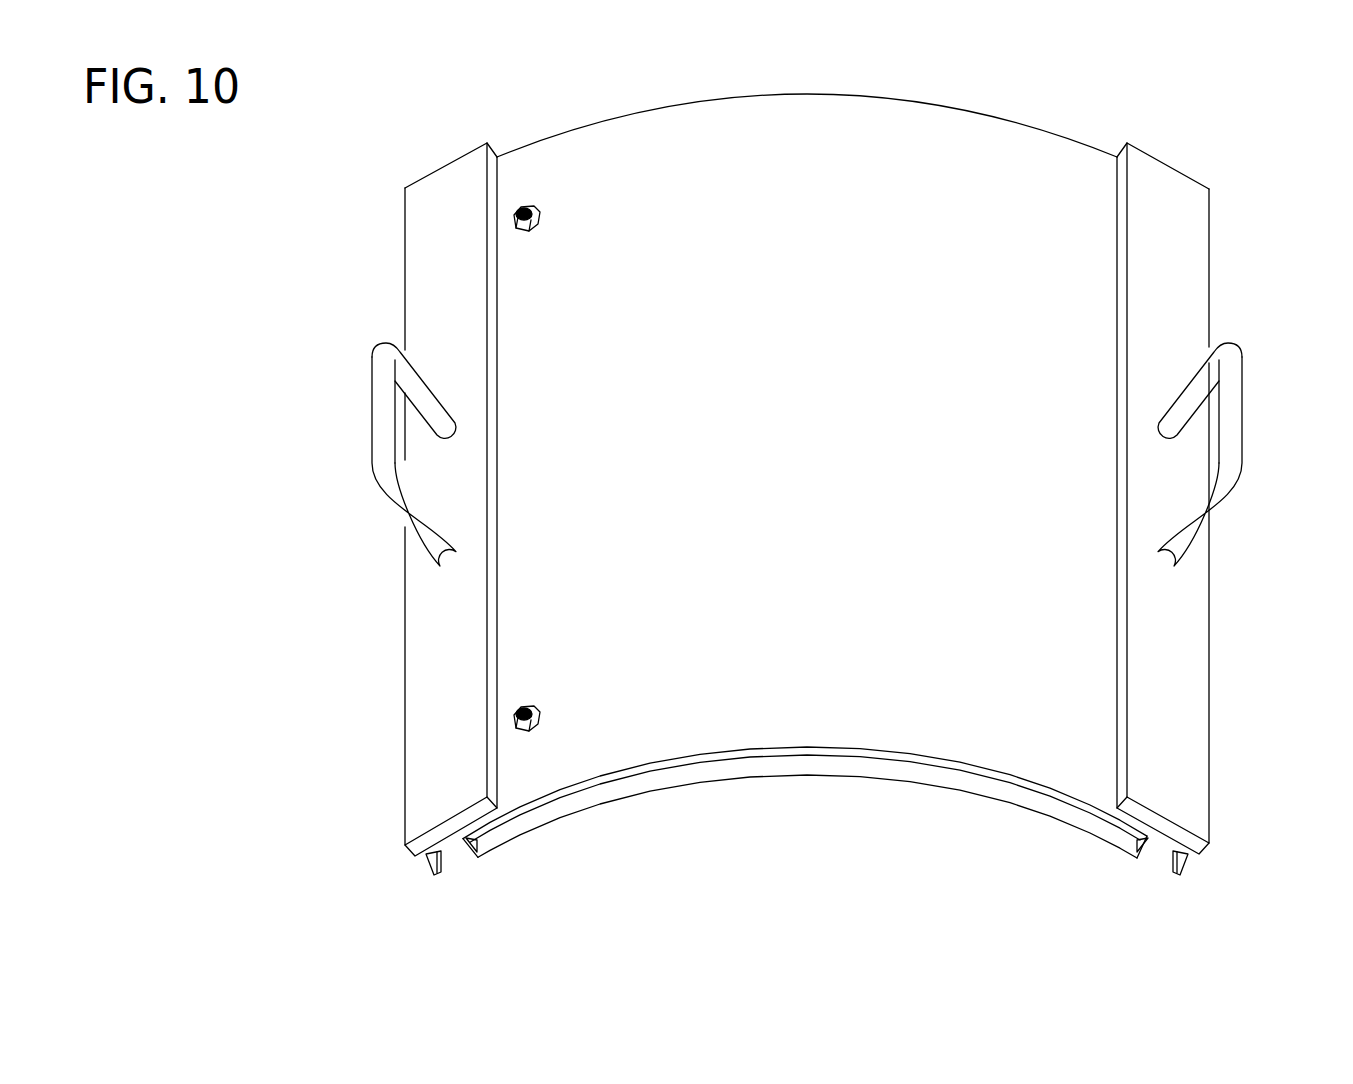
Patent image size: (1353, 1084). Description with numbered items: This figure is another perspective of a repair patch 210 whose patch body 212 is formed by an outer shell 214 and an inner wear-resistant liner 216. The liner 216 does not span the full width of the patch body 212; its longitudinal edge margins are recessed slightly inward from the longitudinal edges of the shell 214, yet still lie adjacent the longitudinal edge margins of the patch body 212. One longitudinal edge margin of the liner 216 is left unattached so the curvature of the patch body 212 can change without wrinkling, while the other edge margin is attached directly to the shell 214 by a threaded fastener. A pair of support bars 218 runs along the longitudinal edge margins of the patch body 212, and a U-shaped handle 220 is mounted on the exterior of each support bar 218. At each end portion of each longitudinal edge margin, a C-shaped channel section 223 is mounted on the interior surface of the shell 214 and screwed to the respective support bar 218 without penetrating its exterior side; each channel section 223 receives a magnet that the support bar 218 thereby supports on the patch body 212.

The patch 210 is at (184, 832).
The patch body 212 is at (614, 840).
The outer shell 214 is at (1018, 777).
The inner wear-resistant liner 216 is at (968, 793).
The support bar 218 is at (1190, 280).
The U-shaped handle 220 is at (385, 436).
The channel section 223 is at (444, 858).